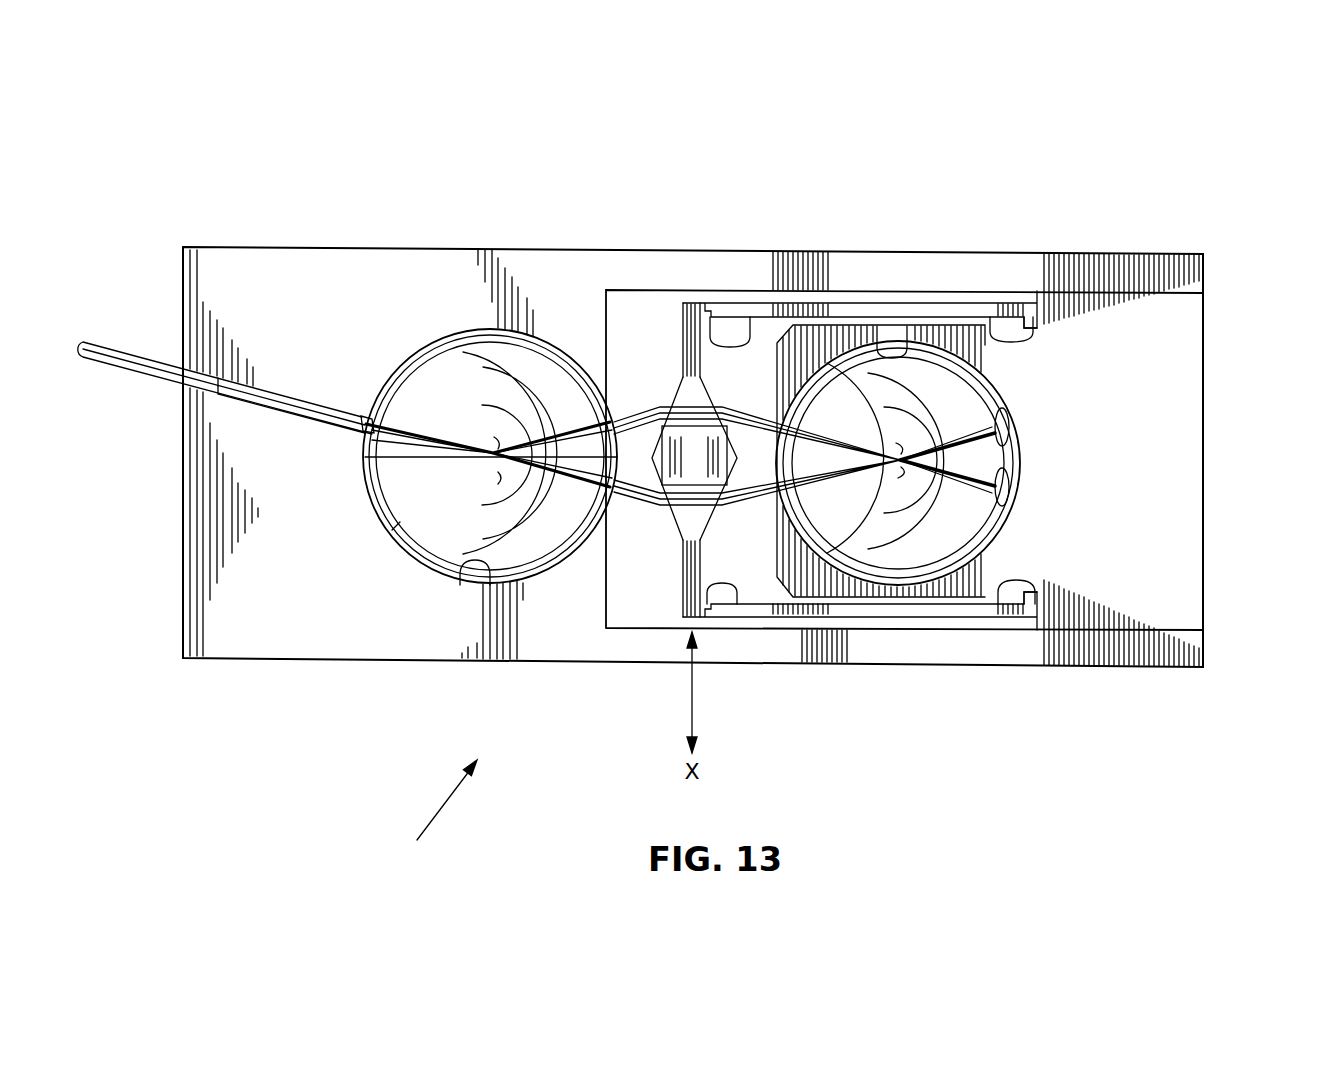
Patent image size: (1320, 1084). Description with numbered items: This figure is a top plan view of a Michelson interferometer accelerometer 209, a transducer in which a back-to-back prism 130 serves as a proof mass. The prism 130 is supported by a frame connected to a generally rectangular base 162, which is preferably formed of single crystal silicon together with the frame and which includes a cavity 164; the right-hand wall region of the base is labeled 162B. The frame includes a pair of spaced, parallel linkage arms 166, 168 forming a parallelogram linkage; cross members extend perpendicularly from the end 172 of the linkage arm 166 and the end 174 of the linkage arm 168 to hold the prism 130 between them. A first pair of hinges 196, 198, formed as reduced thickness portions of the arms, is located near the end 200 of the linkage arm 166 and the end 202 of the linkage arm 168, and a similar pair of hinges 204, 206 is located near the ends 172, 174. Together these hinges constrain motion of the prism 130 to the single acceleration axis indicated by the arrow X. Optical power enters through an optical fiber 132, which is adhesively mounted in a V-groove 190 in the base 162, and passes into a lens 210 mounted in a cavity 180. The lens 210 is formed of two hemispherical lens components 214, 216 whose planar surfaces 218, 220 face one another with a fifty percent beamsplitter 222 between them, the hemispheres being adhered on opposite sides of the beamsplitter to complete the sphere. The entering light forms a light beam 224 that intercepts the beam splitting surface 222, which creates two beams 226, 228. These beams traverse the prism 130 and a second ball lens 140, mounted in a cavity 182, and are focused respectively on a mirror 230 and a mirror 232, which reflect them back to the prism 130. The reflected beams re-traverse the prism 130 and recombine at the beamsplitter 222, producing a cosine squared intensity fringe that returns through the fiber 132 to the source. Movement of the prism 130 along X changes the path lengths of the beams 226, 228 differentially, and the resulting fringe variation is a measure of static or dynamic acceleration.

The prism 130 is at (672, 403).
The optical fiber 132 is at (112, 343).
The second ball lens 140 is at (873, 586).
The base 162 is at (238, 248).
The housing wall 162B is at (1170, 667).
The cavity 164 is at (607, 560).
The linkage arm 166 is at (945, 318).
The linkage arm 168 is at (903, 630).
The end of linkage arm 172 is at (690, 303).
The end of linkage arm 174 is at (740, 604).
The cavity 180 is at (462, 585).
The cavity 182 is at (885, 355).
The V-groove 190 is at (190, 388).
The hinge 196 is at (1000, 340).
The hinge 198 is at (1027, 630).
The end of linkage arm 200 is at (1018, 320).
The end of linkage arm 202 is at (1005, 600).
The hinge 204 is at (735, 347).
The hinge 206 is at (720, 604).
The Michelson interferometer accelerometer 209 is at (431, 822).
The lens 210 is at (428, 348).
The lens component 214 is at (440, 335).
The lens component 216 is at (425, 566).
The planar surface 218 is at (430, 530).
The planar surface 220 is at (400, 425).
The beamsplitter 222 is at (400, 525).
The light beam 224 is at (367, 460).
The optical beam 226 is at (632, 410).
The optical beam 228 is at (628, 512).
The mirror 230 is at (1006, 431).
The mirror 232 is at (1006, 488).